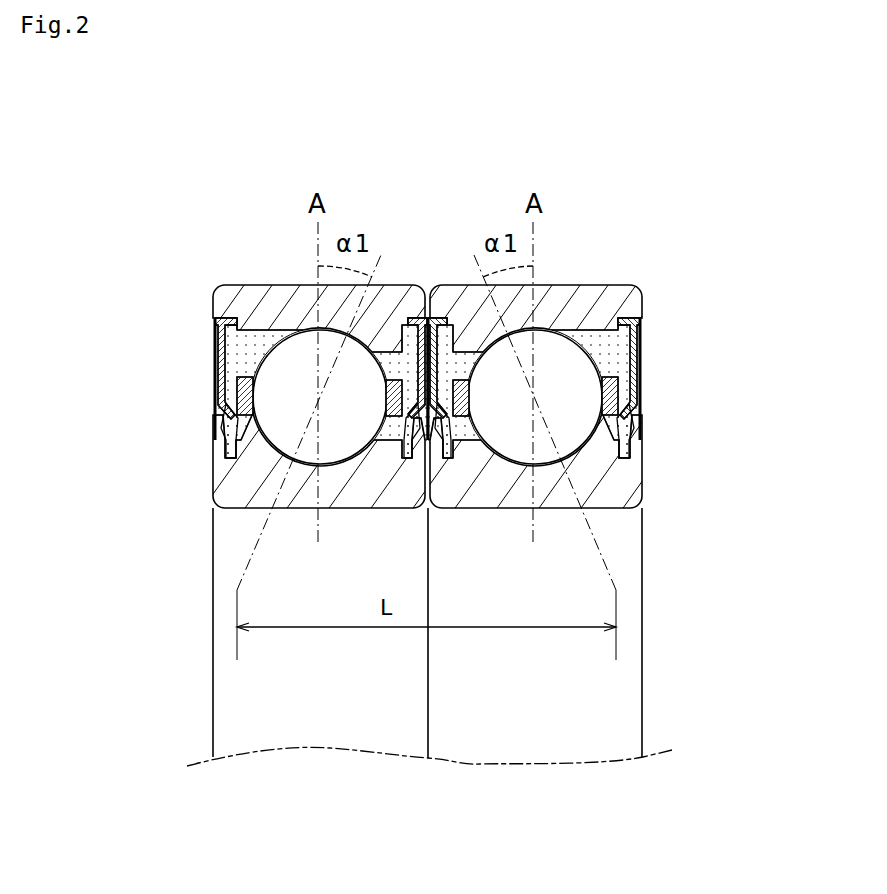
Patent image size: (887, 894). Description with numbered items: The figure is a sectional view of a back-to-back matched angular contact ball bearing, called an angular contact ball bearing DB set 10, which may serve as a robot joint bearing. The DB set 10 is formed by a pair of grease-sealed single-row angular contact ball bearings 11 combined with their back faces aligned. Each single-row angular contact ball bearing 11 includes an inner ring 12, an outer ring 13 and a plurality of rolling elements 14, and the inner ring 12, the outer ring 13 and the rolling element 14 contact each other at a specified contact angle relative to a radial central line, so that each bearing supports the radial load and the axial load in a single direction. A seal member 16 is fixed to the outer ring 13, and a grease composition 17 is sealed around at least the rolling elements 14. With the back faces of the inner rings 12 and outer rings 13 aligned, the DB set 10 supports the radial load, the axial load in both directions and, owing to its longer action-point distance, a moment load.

The angular contact ball bearing DB set 10 is at (668, 243).
The single-row angular contact ball bearing 11 is at (213, 610).
The inner ring 12 is at (215, 485).
The outer ring 13 is at (222, 293).
The rolling element 14 is at (297, 436).
The seal member 16 is at (213, 433).
The grease composition 17 is at (218, 358).